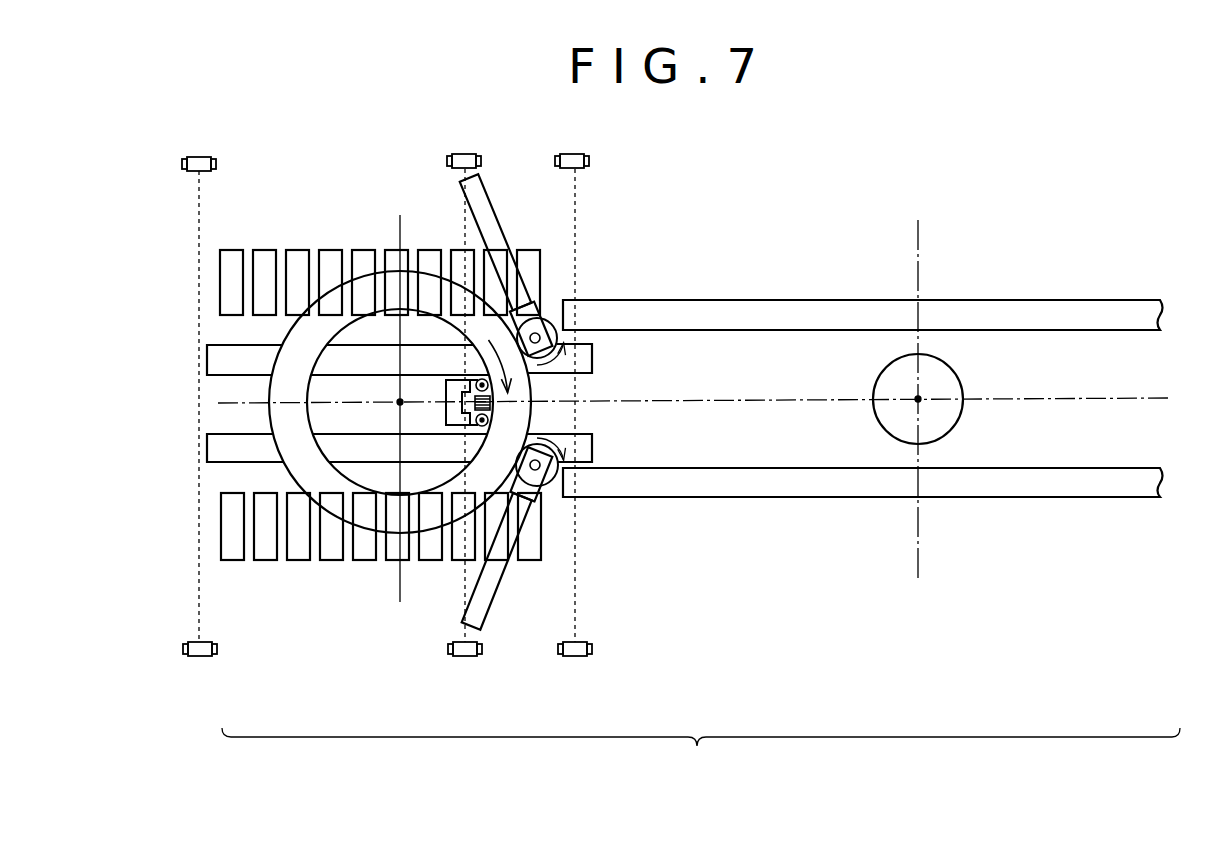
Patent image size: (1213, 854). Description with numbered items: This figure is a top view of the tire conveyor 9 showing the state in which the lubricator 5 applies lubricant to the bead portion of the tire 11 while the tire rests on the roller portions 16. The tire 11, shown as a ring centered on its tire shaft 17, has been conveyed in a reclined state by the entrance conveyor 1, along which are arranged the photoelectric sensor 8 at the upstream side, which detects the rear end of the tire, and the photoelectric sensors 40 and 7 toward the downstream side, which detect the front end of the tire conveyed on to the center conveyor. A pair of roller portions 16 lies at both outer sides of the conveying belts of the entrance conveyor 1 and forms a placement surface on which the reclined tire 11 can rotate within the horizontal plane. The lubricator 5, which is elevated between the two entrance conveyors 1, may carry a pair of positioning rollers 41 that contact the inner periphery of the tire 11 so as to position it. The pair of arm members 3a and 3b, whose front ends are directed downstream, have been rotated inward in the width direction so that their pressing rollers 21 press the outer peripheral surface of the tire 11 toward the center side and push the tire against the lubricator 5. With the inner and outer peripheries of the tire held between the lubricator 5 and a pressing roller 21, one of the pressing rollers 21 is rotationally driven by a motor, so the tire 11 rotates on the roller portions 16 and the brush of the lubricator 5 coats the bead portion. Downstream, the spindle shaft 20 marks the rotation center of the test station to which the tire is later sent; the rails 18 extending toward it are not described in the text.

The entrance conveyor 1 is at (215, 362).
The arm member 3a is at (487, 589).
The arm member 3b is at (487, 219).
The lubricator 5 is at (497, 402).
The photoelectric sensor 7 is at (577, 657).
The photoelectric sensor 8 is at (200, 657).
The tire conveyor 9 is at (701, 752).
The tire 11 is at (340, 300).
The roller portion 16 is at (550, 248).
The tire shaft 17 is at (397, 404).
The guide rails 18 is at (1085, 398).
The spindle shaft 20 is at (922, 401).
The pressing roller 21 is at (547, 330).
The photoelectric sensor 40 is at (467, 657).
The positioning roller 41 is at (484, 428).